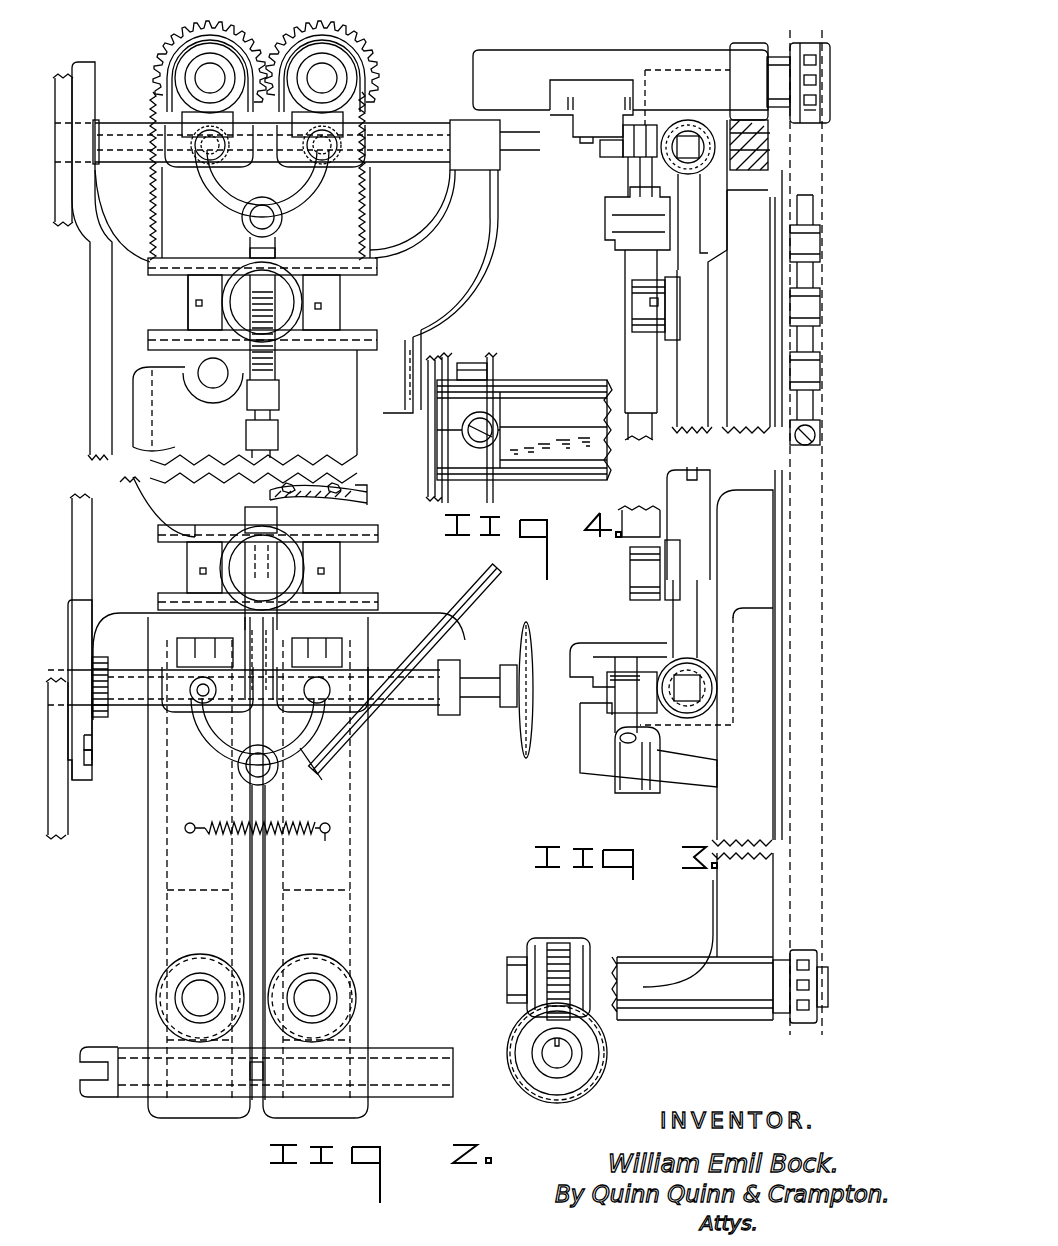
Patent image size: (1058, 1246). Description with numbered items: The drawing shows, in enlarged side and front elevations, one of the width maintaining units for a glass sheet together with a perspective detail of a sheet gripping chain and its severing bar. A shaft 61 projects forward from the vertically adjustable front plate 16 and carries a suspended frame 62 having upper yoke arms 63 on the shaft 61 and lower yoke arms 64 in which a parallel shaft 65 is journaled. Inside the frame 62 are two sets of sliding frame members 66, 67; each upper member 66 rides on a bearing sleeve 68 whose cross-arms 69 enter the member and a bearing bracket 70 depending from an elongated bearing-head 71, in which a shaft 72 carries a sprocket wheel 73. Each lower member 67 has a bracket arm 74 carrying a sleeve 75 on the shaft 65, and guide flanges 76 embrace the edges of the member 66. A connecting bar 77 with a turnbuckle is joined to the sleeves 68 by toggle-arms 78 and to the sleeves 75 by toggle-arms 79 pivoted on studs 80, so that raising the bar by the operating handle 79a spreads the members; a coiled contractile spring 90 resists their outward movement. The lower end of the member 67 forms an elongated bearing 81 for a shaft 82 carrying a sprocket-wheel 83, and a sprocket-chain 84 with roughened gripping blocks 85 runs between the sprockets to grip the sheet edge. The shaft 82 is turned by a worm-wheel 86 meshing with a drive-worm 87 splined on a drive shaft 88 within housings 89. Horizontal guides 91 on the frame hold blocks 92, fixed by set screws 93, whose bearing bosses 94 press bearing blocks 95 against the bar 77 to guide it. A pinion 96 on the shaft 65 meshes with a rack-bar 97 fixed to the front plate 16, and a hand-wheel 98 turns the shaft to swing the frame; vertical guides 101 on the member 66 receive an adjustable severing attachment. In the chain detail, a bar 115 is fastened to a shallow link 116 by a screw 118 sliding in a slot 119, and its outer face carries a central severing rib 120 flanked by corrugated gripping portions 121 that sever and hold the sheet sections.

In FIG. 2, the front plate 16 is at (62, 74).
In FIG. 2, the shaft 61 is at (416, 124).
In FIG. 3, the shaft 61 is at (689, 160).
In FIG. 2, the frame 62 is at (433, 333).
In FIG. 3, the frame 62 is at (710, 330).
In FIG. 2, the yoke arms 63 is at (95, 75).
In FIG. 2, the yoke arms 64 is at (78, 652).
In FIG. 2, the shaft 65 is at (430, 706).
In FIG. 3, the shaft 65 is at (700, 688).
In FIG. 2, the frame members 66 is at (168, 218).
In FIG. 3, the frame members 66 is at (748, 311).
In FIG. 2, the frame members 67 is at (340, 806).
In FIG. 3, the frame members 67 is at (706, 755).
In FIG. 2, the bearing sleeve 68 is at (170, 136).
In FIG. 3, the bearing sleeve 68 is at (692, 120).
In FIG. 2, the cross-arms 69 is at (204, 159).
In FIG. 3, the cross-arms 69 is at (766, 152).
In FIG. 3, the bearing bracket 70 is at (600, 150).
In FIG. 2, the bearing-head 71 is at (230, 55).
In FIG. 3, the bearing-head 71 is at (642, 62).
In FIG. 2, the shaft 72 is at (194, 70).
In FIG. 3, the shaft 72 is at (828, 72).
In FIG. 3, the sprocket wheel 73 is at (818, 100).
In FIG. 2, the bracket arm 74 is at (345, 652).
In FIG. 3, the bracket arm 74 is at (626, 641).
In FIG. 2, the sleeve 75 is at (196, 705).
In FIG. 3, the sleeve 75 is at (714, 676).
In FIG. 2, the guide flanges 76 is at (356, 490).
In FIG. 3, the guide flanges 76 is at (637, 218).
In FIG. 2, the connecting bar 77 is at (280, 378).
In FIG. 3, the connecting bar 77 is at (652, 392).
In FIG. 2, the toggle-arms 78 is at (226, 212).
In FIG. 3, the toggle-arms 78 is at (650, 197).
In FIG. 2, the toggle-arms 79 is at (212, 746).
In FIG. 3, the toggle-arms 79 is at (662, 735).
In FIG. 2, the operating handle 79a is at (438, 620).
In FIG. 2, the studs 80 is at (200, 692).
In FIG. 3, the elongated bearing 81 is at (690, 1001).
In FIG. 2, the shaft 82 is at (256, 998).
In FIG. 3, the shaft 82 is at (595, 956).
In FIG. 3, the sprocket-wheel 83 is at (810, 976).
In FIG. 3, the sprocket-chain 84 is at (818, 281).
In FIG. 4, the sprocket-chain 84 is at (473, 364).
In FIG. 3, the gripping blocks 85 is at (818, 368).
In FIG. 3, the worm-wheel 86 is at (562, 945).
In FIG. 3, the drive-worm 87 is at (553, 1096).
In FIG. 2, the drive shaft 88 is at (121, 1086).
In FIG. 3, the drive shaft 88 is at (574, 1058).
In FIG. 2, the housings 89 is at (346, 1040).
In FIG. 3, the housings 89 is at (512, 1036).
In FIG. 2, the coiled contractile spring 90 is at (300, 836).
In FIG. 2, the horizontal guides 91 is at (372, 336).
In FIG. 3, the horizontal guides 91 is at (679, 292).
In FIG. 2, the blocks 92 is at (190, 295).
In FIG. 3, the blocks 92 is at (654, 308).
In FIG. 2, the set screws 93 is at (195, 306).
In FIG. 2, the bearing boss 94 is at (284, 274).
In FIG. 3, the bearing boss 94 is at (632, 305).
In FIG. 2, the bearing block 95 is at (240, 306).
In FIG. 2, the pinion 96 is at (105, 666).
In FIG. 2, the rack-bar 97 is at (98, 737).
In FIG. 3, the rack-bar 97 is at (590, 728).
In FIG. 2, the hand-wheel 98 is at (519, 726).
In FIG. 2, the vertical guides 101 is at (332, 486).
In FIG. 3, the vertical guides 101 is at (786, 572).
In FIG. 4, the bars 115 is at (561, 395).
In FIG. 3, the shallow link 116 is at (818, 437).
In FIG. 3, the screw 118 is at (796, 437).
In FIG. 4, the screw 118 is at (492, 441).
In FIG. 4, the slot 119 is at (491, 419).
In FIG. 4, the severing rib 120 is at (575, 446).
In FIG. 4, the corrugated gripping portions 121 is at (588, 394).